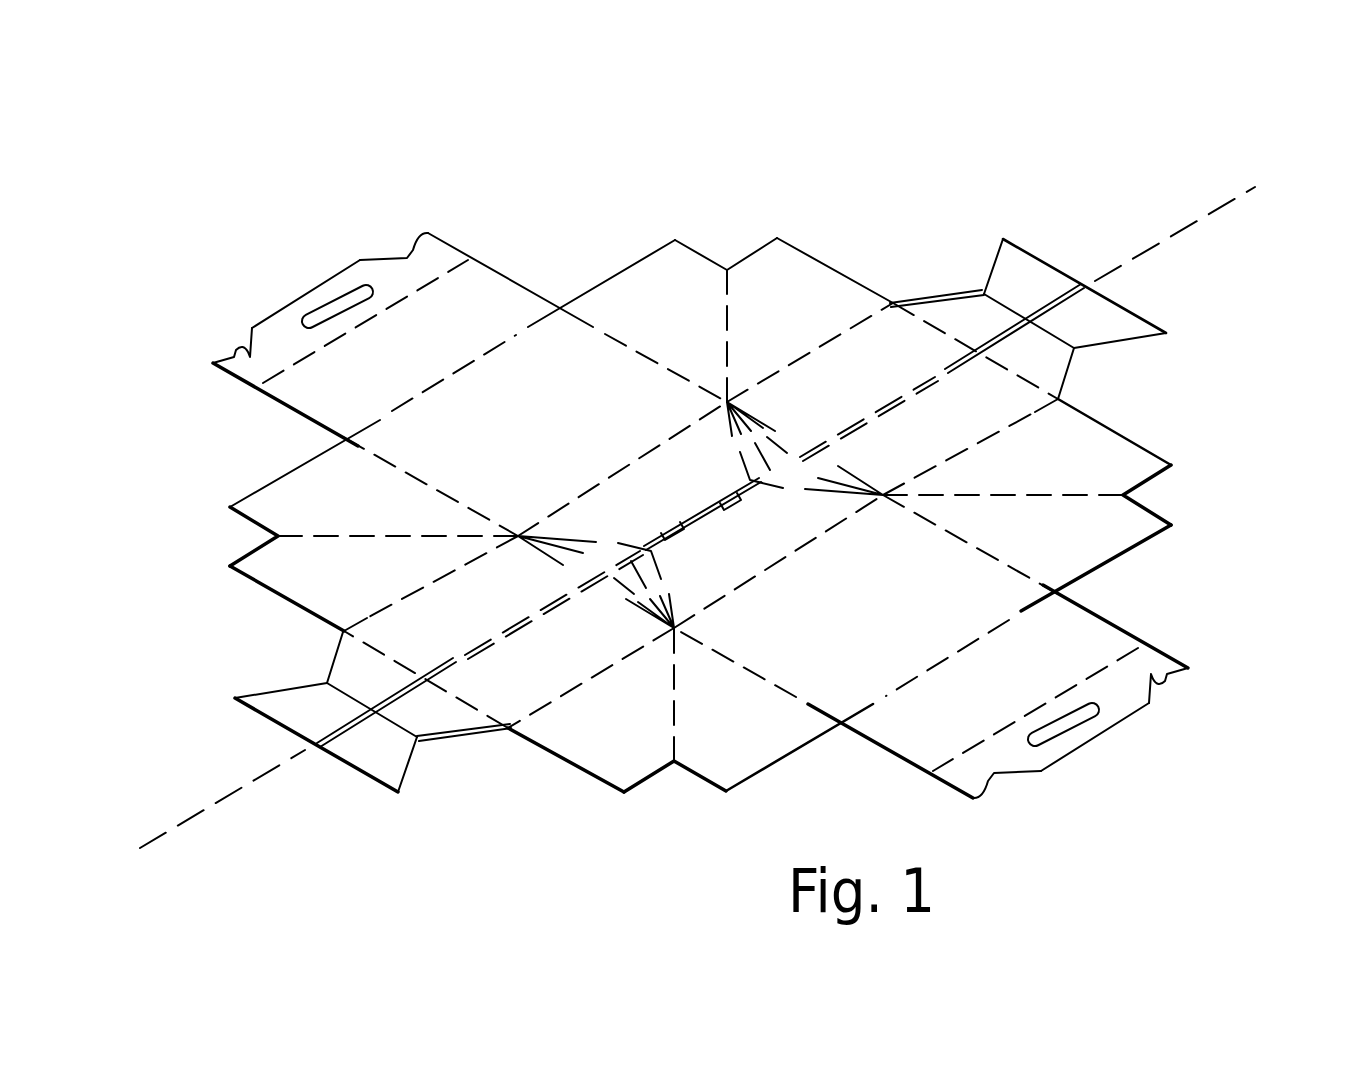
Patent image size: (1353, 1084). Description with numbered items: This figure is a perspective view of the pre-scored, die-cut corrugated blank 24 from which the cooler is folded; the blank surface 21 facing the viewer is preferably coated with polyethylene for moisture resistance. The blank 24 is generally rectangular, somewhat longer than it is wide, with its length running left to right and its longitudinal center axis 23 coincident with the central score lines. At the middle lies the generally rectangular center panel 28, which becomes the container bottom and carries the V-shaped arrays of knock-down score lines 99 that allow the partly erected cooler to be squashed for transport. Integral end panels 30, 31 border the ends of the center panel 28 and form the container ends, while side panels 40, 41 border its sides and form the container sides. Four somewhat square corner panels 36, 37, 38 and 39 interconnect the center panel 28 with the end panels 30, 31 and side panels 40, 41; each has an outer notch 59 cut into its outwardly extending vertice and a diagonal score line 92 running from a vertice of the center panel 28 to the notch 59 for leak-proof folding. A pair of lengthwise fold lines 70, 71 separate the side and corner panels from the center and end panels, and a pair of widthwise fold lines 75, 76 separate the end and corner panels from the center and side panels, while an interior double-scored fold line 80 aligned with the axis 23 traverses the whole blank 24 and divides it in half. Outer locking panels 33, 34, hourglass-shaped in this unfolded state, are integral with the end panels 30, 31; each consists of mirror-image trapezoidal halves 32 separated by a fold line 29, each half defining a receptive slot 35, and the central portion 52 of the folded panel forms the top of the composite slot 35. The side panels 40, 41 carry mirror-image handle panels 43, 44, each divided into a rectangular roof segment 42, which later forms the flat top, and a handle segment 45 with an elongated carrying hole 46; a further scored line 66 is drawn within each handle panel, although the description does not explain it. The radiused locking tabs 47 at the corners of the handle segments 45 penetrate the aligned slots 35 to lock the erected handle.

The blank surface 21 is at (664, 400).
The longitudinal center axis 23 is at (210, 808).
The blank 24 is at (851, 205).
The center panel 28 is at (707, 570).
The fold line 29 is at (960, 300).
The end panel 30 is at (525, 688).
The end panel 31 is at (1027, 378).
The trapezoidal half 32 is at (1103, 323).
The outer locking panel 33 is at (266, 681).
The outer locking panel 34 is at (1162, 298).
The receptive slot 35 is at (1078, 290).
The corner panel 36 is at (208, 517).
The corner panel 37 is at (680, 785).
The corner panel 38 is at (1199, 473).
The corner panel 39 is at (731, 220).
The side panel 40 is at (580, 350).
The side panel 41 is at (985, 598).
The roof segment 42 is at (307, 390).
The handle panel 43 is at (553, 290).
The handle panel 44 is at (939, 798).
The handle segment 45 is at (441, 257).
The carrying hole 46 is at (343, 305).
The locking tab 47 is at (232, 357).
The central portion 52 is at (1027, 310).
The outer notch 59 is at (237, 543).
The fold line 66 is at (980, 733).
The fold line 70 is at (837, 337).
The fold line 71 is at (817, 535).
The fold line 75 is at (427, 487).
The fold line 76 is at (633, 352).
The double-scored fold line 80 is at (875, 421).
The diagonal score line 92 is at (398, 533).
The knock-down score lines 99 is at (598, 553).